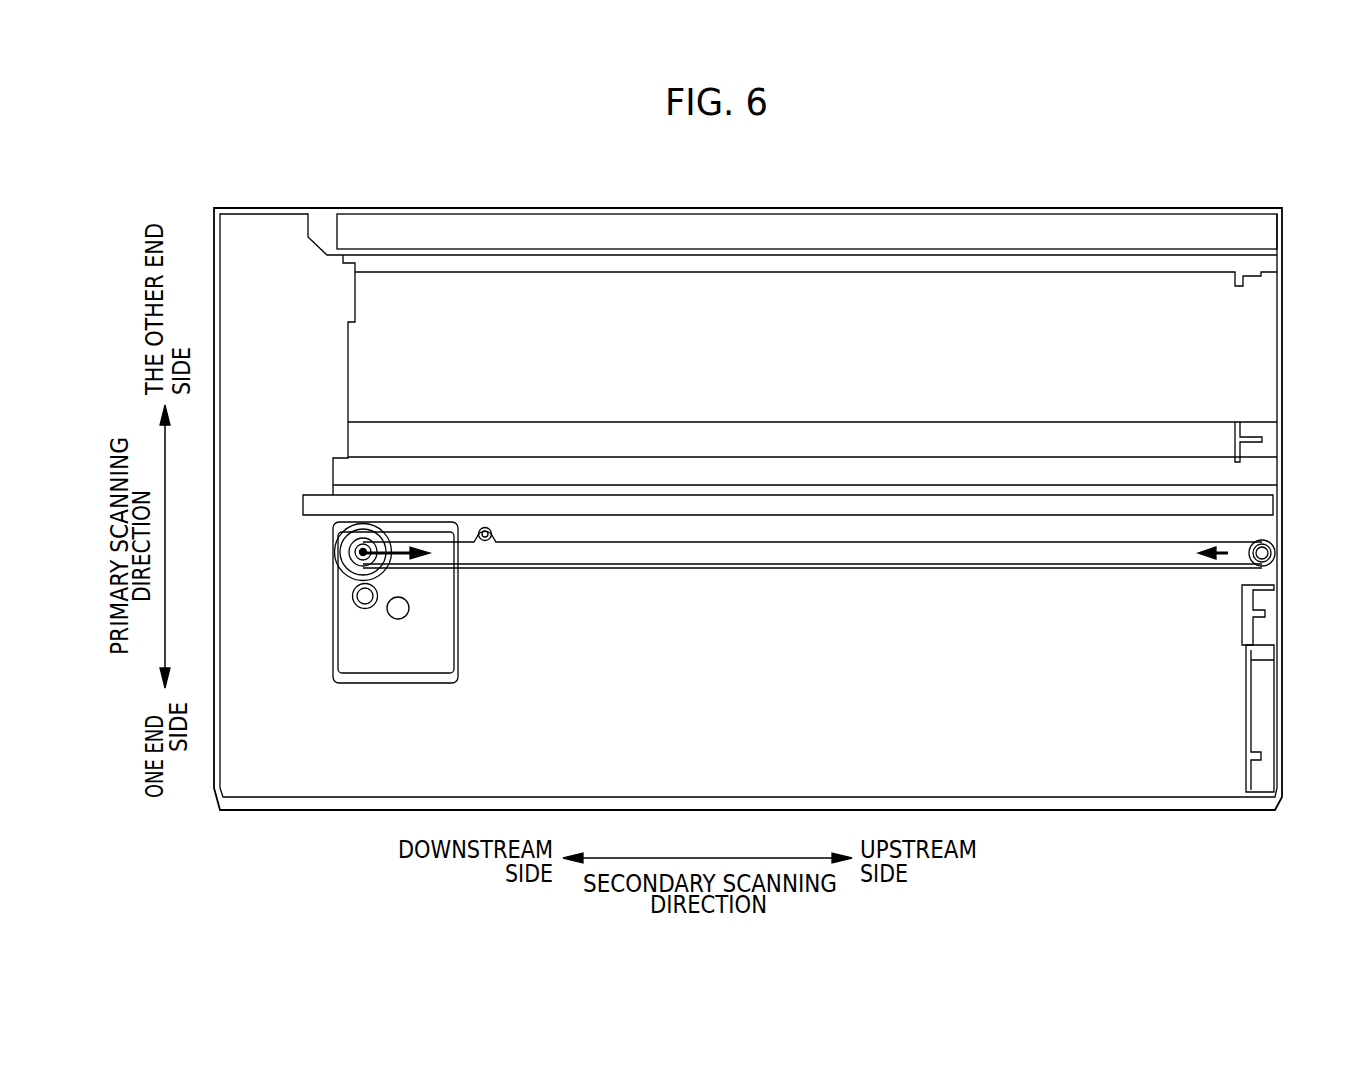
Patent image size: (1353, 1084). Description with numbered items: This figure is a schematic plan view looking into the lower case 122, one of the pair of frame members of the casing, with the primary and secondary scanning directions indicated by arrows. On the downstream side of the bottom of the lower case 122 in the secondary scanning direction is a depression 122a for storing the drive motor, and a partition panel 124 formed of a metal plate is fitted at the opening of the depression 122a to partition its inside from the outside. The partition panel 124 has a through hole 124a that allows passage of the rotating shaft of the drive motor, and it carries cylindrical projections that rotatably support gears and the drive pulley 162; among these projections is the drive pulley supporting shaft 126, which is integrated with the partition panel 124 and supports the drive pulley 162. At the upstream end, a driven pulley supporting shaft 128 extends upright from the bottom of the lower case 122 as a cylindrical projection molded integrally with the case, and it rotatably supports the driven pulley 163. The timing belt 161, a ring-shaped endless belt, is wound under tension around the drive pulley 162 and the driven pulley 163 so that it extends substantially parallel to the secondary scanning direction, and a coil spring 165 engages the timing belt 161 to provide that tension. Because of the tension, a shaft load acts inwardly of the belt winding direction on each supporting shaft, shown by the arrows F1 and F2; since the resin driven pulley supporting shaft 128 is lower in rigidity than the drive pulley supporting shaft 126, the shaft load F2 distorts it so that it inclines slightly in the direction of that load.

The lower case 122 is at (1012, 228).
The depression 122a is at (425, 680).
The partition panel 124 is at (445, 644).
The through hole 124a is at (409, 606).
The drive pulley supporting shaft 126 is at (360, 545).
The driven pulley supporting shaft 128 is at (1276, 555).
The timing belt 161 is at (879, 570).
The drive pulley 162 is at (334, 570).
The driven pulley 163 is at (1268, 543).
The coil spring 165 is at (490, 528).
The shaft load F1 is at (403, 556).
The shaft load F2 is at (1228, 558).